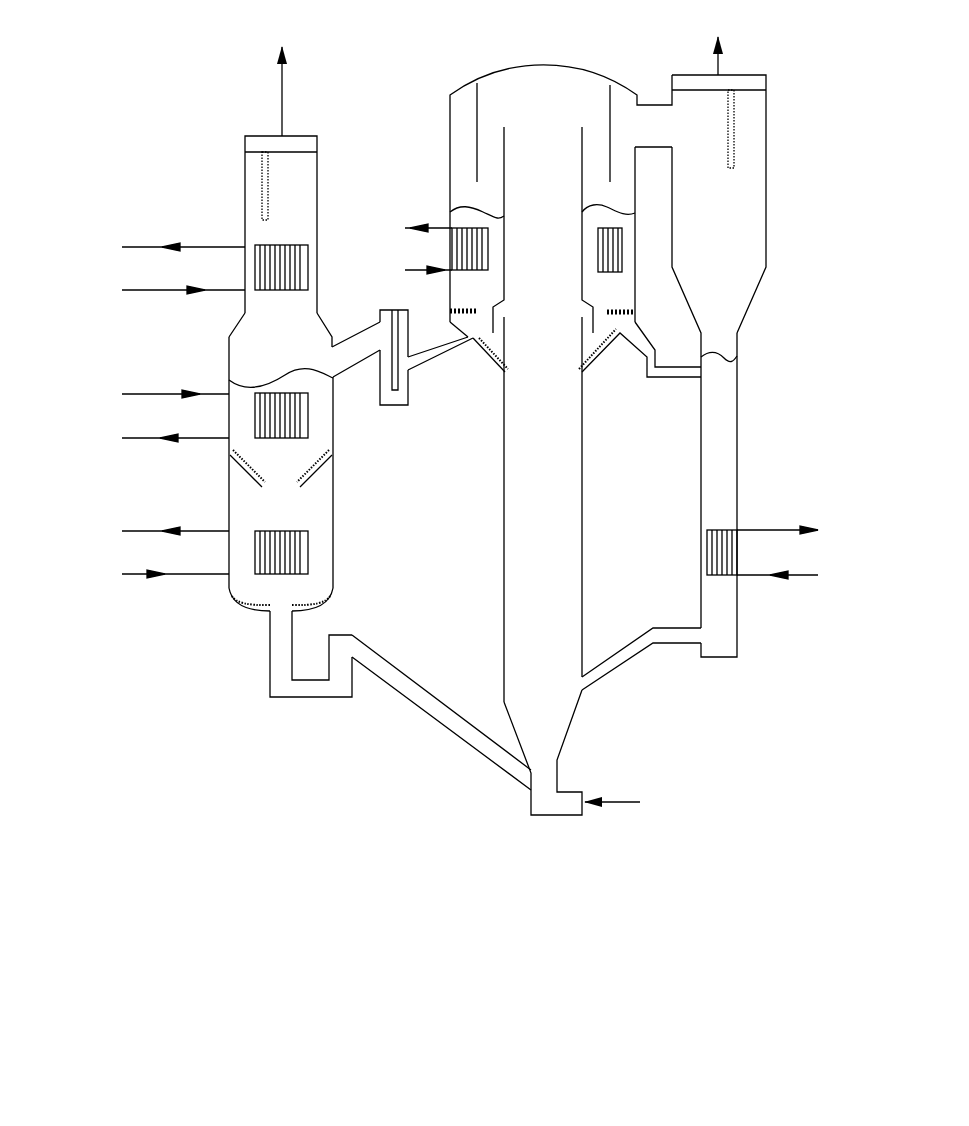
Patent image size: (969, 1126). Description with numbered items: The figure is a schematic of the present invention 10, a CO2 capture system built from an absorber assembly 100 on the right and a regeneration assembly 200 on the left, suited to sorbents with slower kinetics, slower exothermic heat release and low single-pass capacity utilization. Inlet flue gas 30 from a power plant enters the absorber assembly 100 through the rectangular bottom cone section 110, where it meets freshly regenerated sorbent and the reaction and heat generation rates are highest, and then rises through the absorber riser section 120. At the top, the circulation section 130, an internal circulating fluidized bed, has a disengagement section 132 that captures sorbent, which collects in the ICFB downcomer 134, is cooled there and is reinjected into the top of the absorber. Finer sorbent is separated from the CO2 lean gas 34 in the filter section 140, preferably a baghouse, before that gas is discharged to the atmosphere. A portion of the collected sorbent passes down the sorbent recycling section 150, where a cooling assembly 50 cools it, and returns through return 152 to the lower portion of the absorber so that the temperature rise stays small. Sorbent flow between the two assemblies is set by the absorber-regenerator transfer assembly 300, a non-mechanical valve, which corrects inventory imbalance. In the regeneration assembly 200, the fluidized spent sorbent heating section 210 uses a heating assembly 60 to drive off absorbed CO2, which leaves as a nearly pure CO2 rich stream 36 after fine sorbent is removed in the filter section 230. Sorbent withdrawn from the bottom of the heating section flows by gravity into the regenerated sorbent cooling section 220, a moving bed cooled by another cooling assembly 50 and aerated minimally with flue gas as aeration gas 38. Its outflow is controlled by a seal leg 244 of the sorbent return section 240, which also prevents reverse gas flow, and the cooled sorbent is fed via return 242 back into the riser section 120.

The present invention 10 is at (156, 866).
The inlet gas 30 is at (628, 805).
The CO2 lean gas phase 34 is at (718, 43).
The CO2 rich gas stream 36 is at (282, 80).
The aeration gas 38 is at (450, 311).
The cooling assembly 50 is at (470, 401).
The heating assembly 60 is at (215, 416).
The absorber assembly 100 is at (697, 716).
The cone section 110 is at (583, 723).
The riser section 120 is at (500, 584).
The circulation section 130 is at (495, 70).
The disengagement section 132 is at (474, 139).
The ICFB downcomer 134 is at (466, 217).
The filter section 140 is at (774, 172).
The sorbent recycling section 150 is at (750, 468).
The return 152 is at (610, 677).
The regeneration assembly 200 is at (238, 639).
The spent sorbent heating section 210 is at (220, 365).
The regenerated sorbent cooling section 220 is at (222, 495).
The filter section 230 is at (226, 182).
The sorbent return section 240 is at (368, 612).
The return 242 is at (438, 715).
The seal leg 244 is at (313, 687).
The absorber-regenerator transfer assembly 300 is at (392, 407).